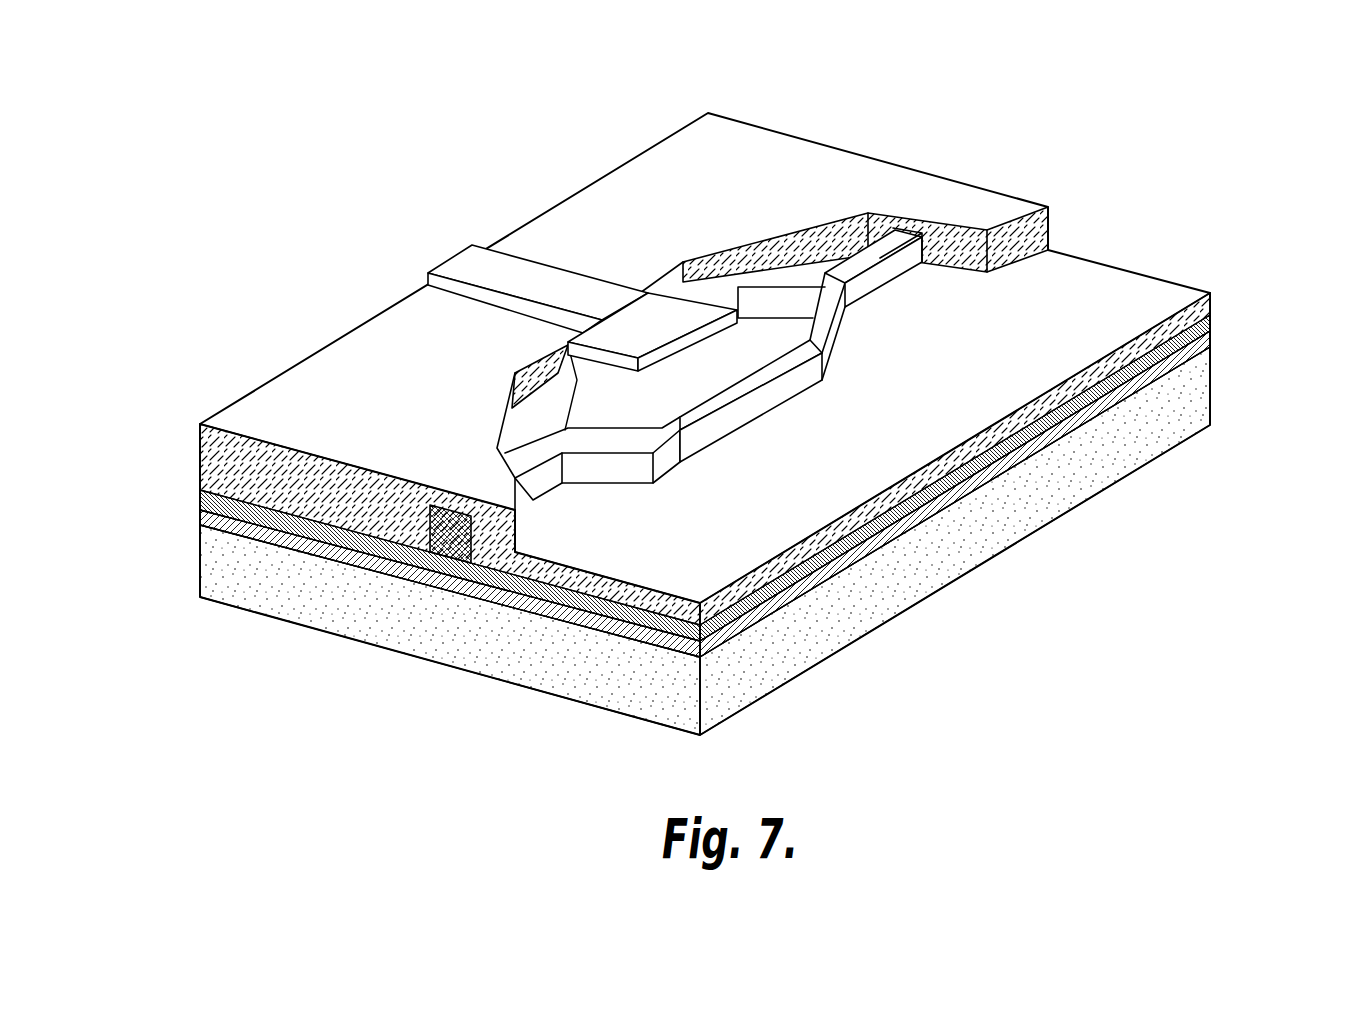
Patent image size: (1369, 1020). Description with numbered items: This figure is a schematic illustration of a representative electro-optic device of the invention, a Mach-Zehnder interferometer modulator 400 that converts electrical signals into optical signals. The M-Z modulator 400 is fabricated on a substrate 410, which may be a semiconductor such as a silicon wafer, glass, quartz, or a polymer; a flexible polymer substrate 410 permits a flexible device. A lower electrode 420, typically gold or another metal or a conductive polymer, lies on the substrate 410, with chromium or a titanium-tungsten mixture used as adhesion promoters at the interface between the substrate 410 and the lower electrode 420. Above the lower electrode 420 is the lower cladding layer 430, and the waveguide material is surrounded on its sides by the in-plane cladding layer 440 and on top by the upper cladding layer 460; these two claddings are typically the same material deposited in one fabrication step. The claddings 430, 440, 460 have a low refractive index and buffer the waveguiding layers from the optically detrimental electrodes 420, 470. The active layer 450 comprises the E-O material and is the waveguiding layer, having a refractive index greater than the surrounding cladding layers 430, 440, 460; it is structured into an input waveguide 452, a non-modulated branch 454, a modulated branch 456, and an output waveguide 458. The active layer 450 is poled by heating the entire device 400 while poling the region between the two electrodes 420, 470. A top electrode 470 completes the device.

The M-Z modulator 400 is at (195, 198).
The substrate 410 is at (200, 556).
The lower electrode 420 is at (200, 515).
The lower cladding layer 430 is at (1212, 327).
The in-plane cladding layer 440 is at (1212, 300).
The active layer 450 is at (432, 533).
The input waveguide 452 is at (513, 383).
The non-modulated branch 454 is at (798, 357).
The modulated branch 456 is at (722, 280).
The output waveguide 458 is at (962, 228).
The upper cladding layer 460 is at (822, 162).
The top electrode 470 is at (580, 287).